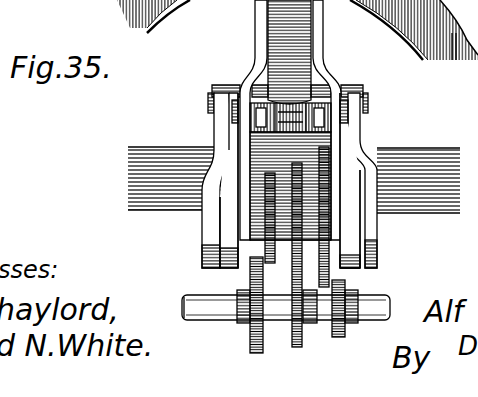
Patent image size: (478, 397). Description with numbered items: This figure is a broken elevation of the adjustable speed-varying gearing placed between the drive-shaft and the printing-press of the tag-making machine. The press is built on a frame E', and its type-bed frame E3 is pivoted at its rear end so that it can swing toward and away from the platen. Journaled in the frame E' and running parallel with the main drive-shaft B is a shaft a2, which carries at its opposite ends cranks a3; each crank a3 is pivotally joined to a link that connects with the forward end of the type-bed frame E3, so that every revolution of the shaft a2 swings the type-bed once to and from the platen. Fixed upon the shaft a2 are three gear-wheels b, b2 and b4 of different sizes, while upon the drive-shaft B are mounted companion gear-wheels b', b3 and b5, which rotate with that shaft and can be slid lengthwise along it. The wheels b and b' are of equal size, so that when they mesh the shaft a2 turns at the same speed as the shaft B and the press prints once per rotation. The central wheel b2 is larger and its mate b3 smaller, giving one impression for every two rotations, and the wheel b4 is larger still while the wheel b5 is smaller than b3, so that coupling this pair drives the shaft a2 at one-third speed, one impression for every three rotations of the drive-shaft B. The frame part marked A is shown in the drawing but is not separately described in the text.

The frame A is at (294, 159).
The frame E' is at (296, 120).
The type-bed frame E3 is at (343, 84).
The shaft a2 is at (208, 200).
The cranks a3 is at (228, 222).
The main drive-shaft B is at (186, 307).
The gear-wheel b is at (262, 265).
The gear-wheel b' is at (254, 323).
The gear-wheel b2 is at (265, 259).
The gear-wheel b3 is at (300, 347).
The gear-wheel b4 is at (320, 270).
The gear-wheel b5 is at (340, 337).